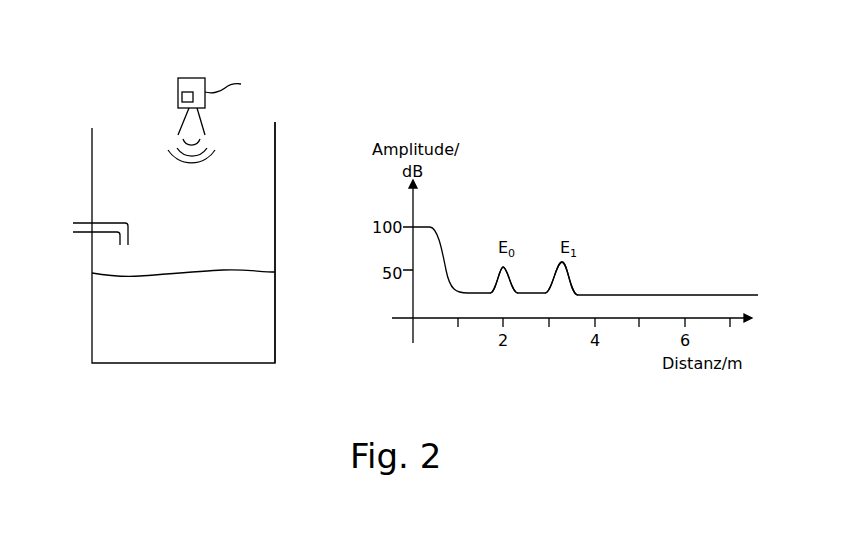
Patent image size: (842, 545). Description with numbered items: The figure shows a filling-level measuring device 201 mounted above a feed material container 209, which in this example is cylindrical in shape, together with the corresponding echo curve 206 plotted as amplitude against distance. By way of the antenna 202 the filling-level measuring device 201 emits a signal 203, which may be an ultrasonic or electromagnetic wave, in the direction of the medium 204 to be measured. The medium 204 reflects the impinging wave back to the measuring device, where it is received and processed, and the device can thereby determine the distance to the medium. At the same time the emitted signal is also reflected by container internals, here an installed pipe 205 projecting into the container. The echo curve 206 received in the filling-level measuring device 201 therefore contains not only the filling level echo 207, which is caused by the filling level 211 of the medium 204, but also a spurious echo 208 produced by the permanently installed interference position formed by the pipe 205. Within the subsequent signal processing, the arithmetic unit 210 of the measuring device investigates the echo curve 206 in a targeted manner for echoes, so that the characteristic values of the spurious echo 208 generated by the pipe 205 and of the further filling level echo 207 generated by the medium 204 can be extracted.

The filling-level measuring device 201 is at (197, 78).
The antenna 202 is at (180, 121).
The signal 203 is at (197, 167).
The medium 204 is at (99, 340).
The installed pipe 205 is at (85, 237).
The echo curve 206 is at (683, 292).
The filling level echo 207 is at (562, 262).
The spurious echo 208 is at (503, 266).
The feed material container 209 is at (278, 222).
The arithmetic unit 210 is at (183, 78).
The filling level 211 is at (262, 272).